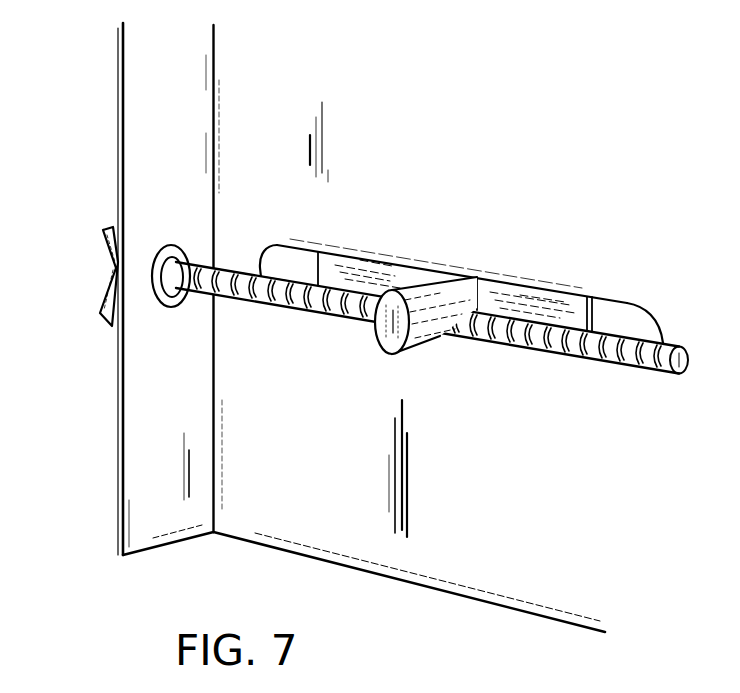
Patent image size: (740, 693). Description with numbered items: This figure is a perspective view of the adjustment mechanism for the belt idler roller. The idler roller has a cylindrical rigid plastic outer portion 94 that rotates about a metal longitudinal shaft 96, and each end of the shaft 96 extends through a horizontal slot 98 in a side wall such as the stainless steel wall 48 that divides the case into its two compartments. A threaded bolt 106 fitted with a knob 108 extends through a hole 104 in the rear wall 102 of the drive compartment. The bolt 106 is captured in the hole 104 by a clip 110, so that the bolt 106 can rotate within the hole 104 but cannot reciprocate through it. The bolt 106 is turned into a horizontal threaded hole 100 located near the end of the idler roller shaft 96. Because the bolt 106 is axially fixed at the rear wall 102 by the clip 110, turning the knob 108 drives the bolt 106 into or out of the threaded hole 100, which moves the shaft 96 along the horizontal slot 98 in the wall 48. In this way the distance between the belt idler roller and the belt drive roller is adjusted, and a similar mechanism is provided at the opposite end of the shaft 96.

The side wall 48 is at (457, 139).
The outer portion 94 is at (588, 301).
The shaft 96 is at (437, 282).
The horizontal slot 98 is at (650, 306).
The threaded hole 100 is at (433, 344).
The rear wall 102 is at (190, 106).
The hole 104 is at (170, 298).
The threaded bolt 106 is at (247, 302).
The knob 108 is at (100, 308).
The clip 110 is at (166, 247).